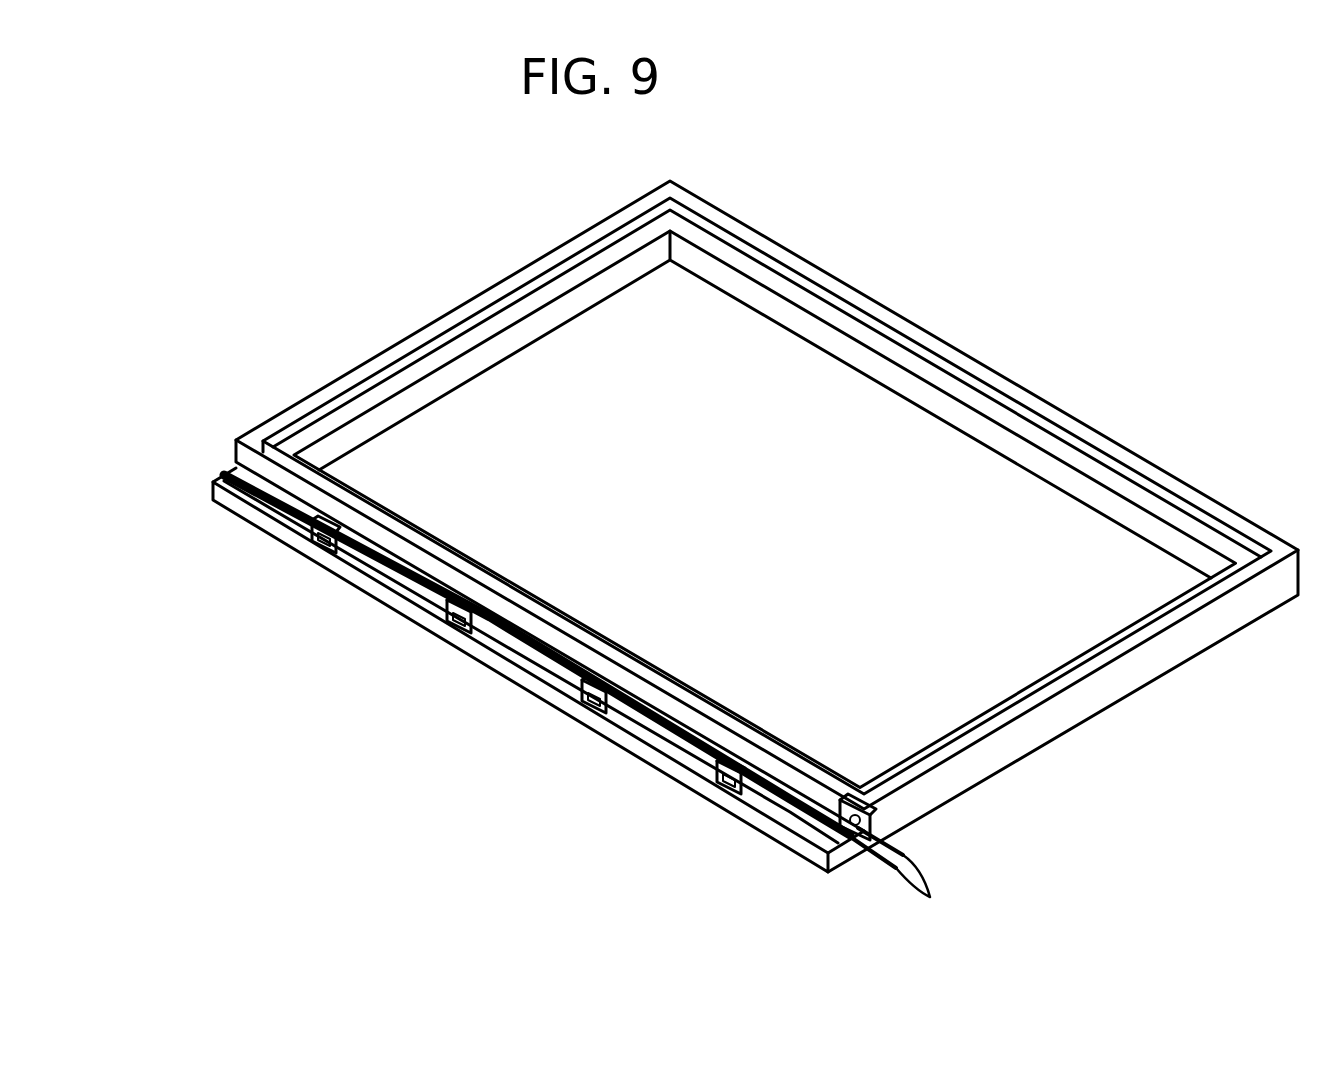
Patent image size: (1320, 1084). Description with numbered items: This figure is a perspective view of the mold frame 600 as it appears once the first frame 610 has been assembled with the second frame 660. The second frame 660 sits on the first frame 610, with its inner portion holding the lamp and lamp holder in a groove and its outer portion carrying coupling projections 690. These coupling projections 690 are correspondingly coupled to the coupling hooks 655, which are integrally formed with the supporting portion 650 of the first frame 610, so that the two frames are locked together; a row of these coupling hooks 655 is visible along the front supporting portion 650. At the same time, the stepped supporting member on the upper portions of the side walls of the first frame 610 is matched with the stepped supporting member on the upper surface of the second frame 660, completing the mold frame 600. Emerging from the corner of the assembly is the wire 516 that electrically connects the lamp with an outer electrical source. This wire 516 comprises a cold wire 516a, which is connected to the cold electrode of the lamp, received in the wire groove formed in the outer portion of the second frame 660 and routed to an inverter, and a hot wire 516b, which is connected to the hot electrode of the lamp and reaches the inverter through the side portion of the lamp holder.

The mold frame 600 is at (701, 573).
The first frame 610 is at (1183, 694).
The second frame 660 is at (215, 442).
The supporting portion 650 is at (625, 733).
The coupling projections 690 is at (720, 782).
The coupling hooks 655 is at (742, 800).
The wire 516 is at (941, 897).
The cold wire 516a is at (902, 902).
The hot wire 516b is at (903, 849).